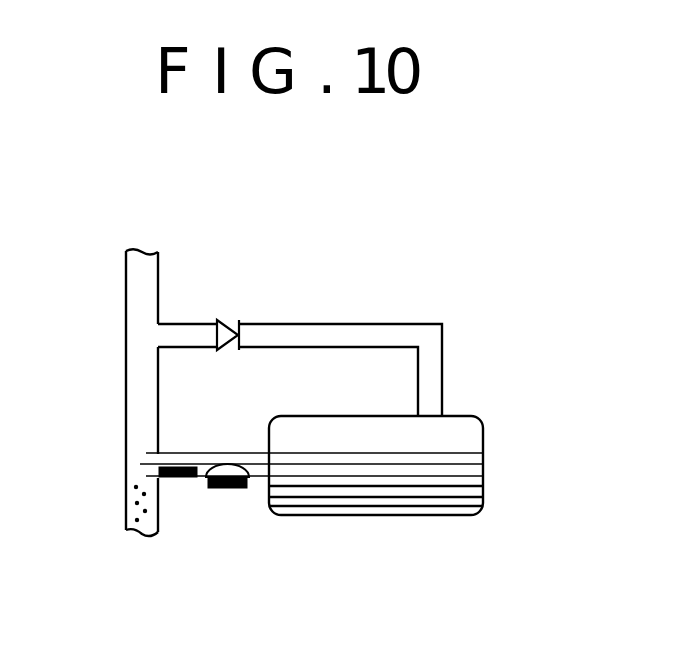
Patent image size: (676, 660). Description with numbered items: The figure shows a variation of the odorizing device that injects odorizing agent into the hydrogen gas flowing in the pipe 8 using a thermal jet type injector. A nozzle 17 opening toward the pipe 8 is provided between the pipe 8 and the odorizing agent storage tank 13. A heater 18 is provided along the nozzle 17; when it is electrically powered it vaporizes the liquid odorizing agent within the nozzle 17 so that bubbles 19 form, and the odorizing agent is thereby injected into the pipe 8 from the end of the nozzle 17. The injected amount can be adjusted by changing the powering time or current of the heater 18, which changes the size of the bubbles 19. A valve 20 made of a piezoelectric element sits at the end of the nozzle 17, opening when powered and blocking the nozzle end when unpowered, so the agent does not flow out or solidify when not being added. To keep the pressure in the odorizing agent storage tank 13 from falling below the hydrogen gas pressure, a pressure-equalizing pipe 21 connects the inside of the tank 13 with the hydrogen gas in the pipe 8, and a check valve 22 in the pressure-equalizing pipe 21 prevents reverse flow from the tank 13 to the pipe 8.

The pipe 8 is at (125, 471).
The odorizing agent storage tank 13 is at (392, 515).
The nozzle 17 is at (242, 453).
The heater 18 is at (228, 488).
The bubbles 19 is at (227, 463).
The valve 20 is at (172, 478).
The pressure-equalizing pipe 21 is at (443, 333).
The check valve 22 is at (226, 322).